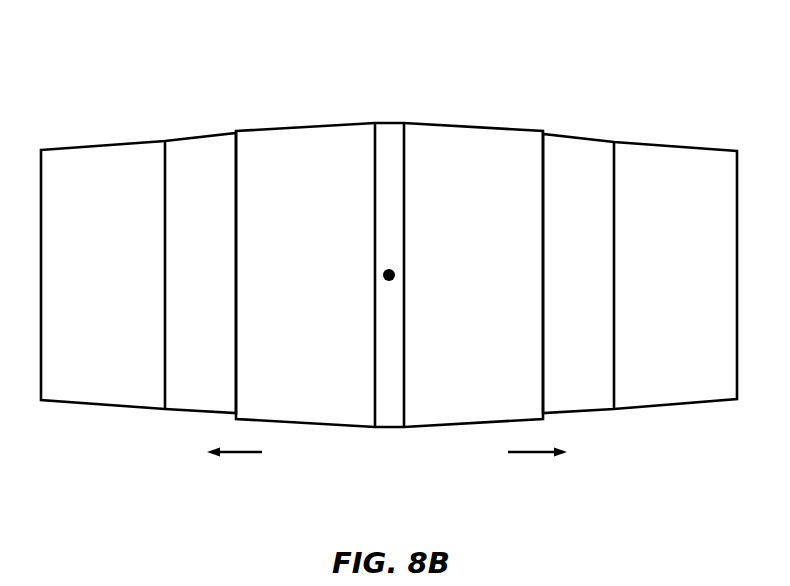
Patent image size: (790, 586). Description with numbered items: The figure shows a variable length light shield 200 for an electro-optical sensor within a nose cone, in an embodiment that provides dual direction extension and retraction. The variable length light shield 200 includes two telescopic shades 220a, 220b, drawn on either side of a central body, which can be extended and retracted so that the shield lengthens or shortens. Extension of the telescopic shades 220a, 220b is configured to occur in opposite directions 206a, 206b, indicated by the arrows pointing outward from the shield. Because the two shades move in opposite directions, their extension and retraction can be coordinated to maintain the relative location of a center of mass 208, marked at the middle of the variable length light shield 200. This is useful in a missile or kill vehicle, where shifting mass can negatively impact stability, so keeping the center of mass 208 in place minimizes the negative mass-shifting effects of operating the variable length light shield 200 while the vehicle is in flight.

The variable length light shield 200 is at (389, 225).
The telescopic shade 220a is at (196, 99).
The telescopic shade 220b is at (596, 99).
The center of mass 208 is at (395, 275).
The direction 206a is at (243, 452).
The direction 206b is at (533, 452).